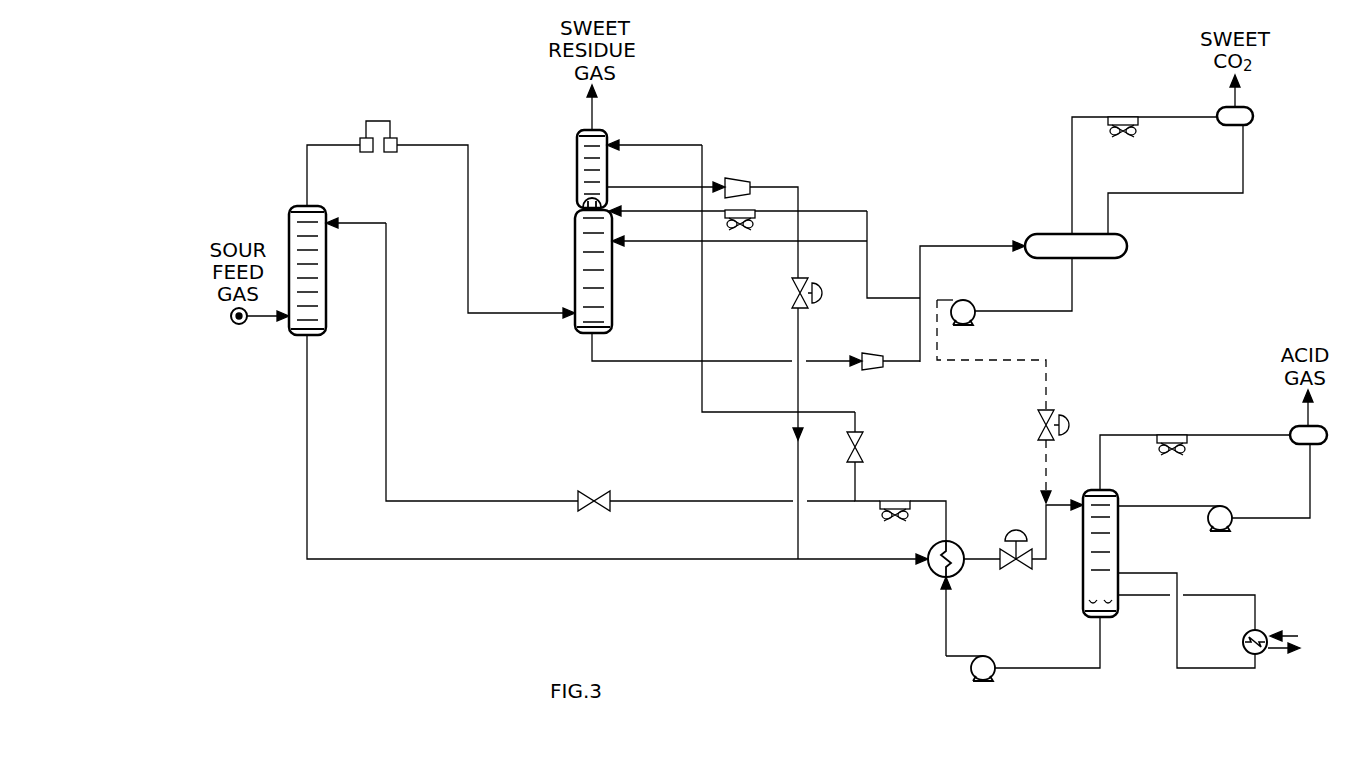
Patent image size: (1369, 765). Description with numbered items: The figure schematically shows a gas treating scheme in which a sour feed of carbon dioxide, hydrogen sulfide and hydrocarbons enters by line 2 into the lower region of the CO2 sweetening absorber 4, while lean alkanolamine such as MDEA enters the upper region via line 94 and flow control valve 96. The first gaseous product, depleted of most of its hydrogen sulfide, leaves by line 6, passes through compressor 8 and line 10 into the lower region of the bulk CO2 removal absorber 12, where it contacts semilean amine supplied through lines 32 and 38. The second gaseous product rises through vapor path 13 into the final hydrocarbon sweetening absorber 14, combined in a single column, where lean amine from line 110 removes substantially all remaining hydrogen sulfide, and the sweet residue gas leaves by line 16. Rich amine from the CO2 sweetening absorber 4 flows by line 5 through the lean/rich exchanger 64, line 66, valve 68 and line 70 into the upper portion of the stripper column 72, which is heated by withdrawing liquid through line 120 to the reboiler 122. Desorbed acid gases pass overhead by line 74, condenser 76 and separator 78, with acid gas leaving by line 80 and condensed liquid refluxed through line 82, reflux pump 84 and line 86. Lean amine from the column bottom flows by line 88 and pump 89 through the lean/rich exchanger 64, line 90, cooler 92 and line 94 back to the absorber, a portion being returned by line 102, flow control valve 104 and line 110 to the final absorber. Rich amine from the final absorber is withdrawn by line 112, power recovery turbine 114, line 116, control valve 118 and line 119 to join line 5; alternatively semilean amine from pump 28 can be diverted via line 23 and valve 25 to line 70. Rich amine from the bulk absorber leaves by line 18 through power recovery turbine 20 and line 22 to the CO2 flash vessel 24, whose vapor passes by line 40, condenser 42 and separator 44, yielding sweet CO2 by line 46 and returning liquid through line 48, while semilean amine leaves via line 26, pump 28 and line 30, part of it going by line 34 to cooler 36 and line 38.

The line 2 is at (261, 318).
The CO2 sweetening absorber 4 is at (326, 268).
The line 5 is at (308, 420).
The line 6 is at (308, 180).
The compressor 8 is at (393, 152).
The line 10 is at (468, 180).
The bulk CO2 removal absorber 12 is at (575, 292).
The vapor path 13 is at (577, 218).
The final hydrocarbon sweetening absorber 14 is at (577, 178).
The line 16 is at (588, 118).
The line 18 is at (590, 352).
The power recovery turbine 20 is at (870, 352).
The line 22 is at (920, 288).
The line 23 is at (1048, 386).
The CO2 flash vessel 24 is at (1040, 234).
The valve 25 is at (1056, 412).
The line 26 is at (1072, 290).
The pump 28 is at (972, 325).
The line 30 is at (862, 288).
The line 32 is at (713, 241).
The line 34 is at (838, 212).
The cooler 36 is at (747, 210).
The line 38 is at (642, 212).
The line 40 is at (1072, 186).
The condenser 42 is at (1122, 112).
The separator 44 is at (1253, 112).
The line 46 is at (1230, 98).
The line 48 is at (1243, 168).
The lean/rich exchanger 64 is at (933, 575).
The line 66 is at (976, 562).
The valve 68 is at (1020, 572).
The line 70 is at (1045, 528).
The stripper column 72 is at (1120, 560).
The line 74 is at (1102, 478).
The condenser 76 is at (1160, 434).
The separator 78 is at (1327, 435).
The line 80 is at (1306, 418).
The line 82 is at (1310, 484).
The reflux pump 84 is at (1232, 527).
The line 86 is at (1160, 504).
The line 88 is at (1033, 668).
The pump 89 is at (986, 656).
The line 90 is at (948, 522).
The cooler 92 is at (905, 500).
The line 94 is at (688, 502).
The flow control valve 96 is at (603, 490).
The line 102 is at (858, 486).
The flow control valve 104 is at (860, 430).
The line 110 is at (702, 338).
The line 112 is at (623, 180).
The power recovery turbine 114 is at (738, 177).
The line 116 is at (790, 187).
The control valve 118 is at (793, 308).
The line 119 is at (800, 530).
The line 120 is at (1148, 573).
The reboiler 122 is at (1262, 632).